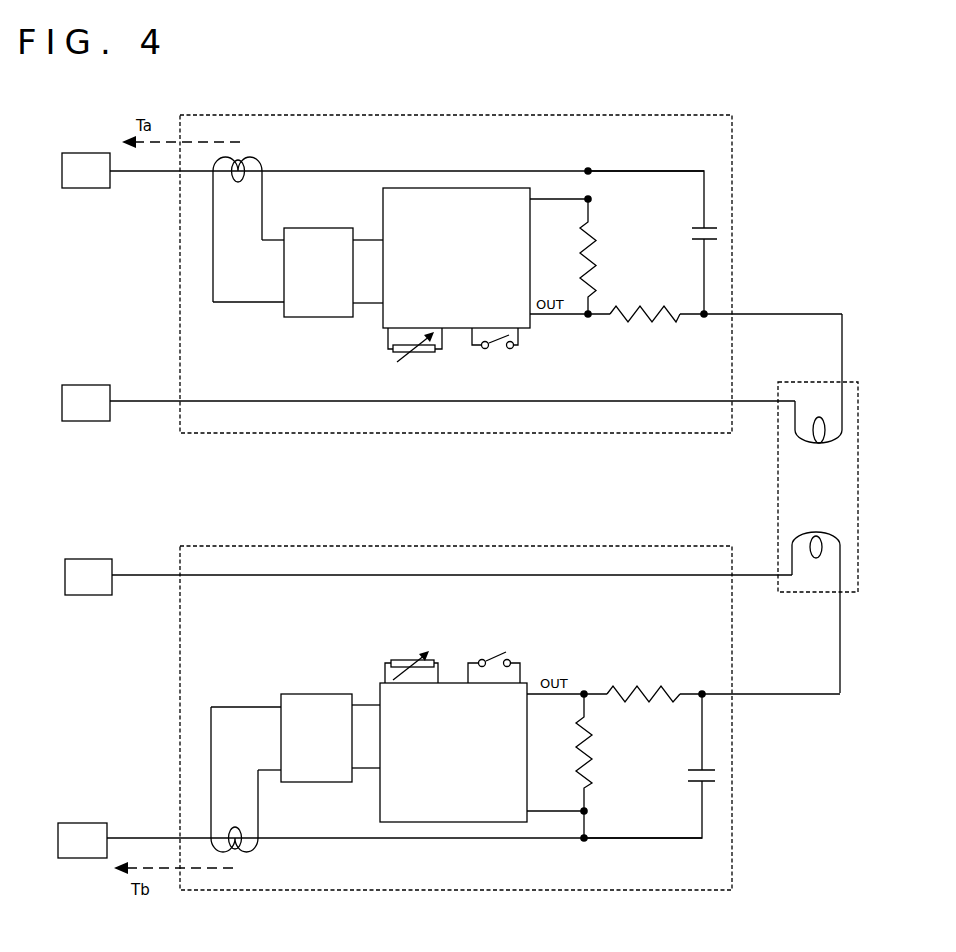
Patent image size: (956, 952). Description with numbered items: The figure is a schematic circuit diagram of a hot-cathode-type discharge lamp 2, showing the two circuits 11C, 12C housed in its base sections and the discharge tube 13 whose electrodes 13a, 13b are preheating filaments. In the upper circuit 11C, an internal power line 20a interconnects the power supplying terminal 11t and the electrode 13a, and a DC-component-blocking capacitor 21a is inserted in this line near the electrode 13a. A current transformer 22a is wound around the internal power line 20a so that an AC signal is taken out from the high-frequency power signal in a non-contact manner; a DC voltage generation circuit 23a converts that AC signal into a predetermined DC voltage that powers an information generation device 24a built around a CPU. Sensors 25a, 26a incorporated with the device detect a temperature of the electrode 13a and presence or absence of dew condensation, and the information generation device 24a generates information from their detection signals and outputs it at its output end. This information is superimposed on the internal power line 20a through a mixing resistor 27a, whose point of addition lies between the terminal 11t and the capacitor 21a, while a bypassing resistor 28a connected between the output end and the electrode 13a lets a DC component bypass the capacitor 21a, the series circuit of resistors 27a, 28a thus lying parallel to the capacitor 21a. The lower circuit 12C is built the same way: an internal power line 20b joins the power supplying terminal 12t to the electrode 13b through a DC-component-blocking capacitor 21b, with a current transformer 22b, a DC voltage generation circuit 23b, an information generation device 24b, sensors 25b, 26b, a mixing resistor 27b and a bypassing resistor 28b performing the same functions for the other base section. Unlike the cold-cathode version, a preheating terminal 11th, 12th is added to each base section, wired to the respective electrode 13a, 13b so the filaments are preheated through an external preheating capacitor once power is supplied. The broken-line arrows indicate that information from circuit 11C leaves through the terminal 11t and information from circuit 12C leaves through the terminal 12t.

The discharge lamp 2 is at (783, 91).
The circuit 11C is at (576, 109).
The circuit 12C is at (475, 540).
The power supplying terminal 11t is at (86, 153).
The preheating terminal 11th is at (104, 362).
The power supplying terminal 12t is at (85, 823).
The preheating terminal 12th is at (107, 537).
The discharge tube 13 is at (771, 480).
The electrode 13a is at (812, 397).
The electrode 13b is at (812, 568).
The internal power line 20a is at (612, 170).
The internal power line 20b is at (655, 840).
The DC-component-blocking capacitor 21a is at (692, 228).
The DC-component-blocking capacitor 21b is at (692, 781).
The current transformer 22a is at (262, 159).
The current transformer 22b is at (258, 853).
The DC voltage generation circuit 23a is at (307, 318).
The DC voltage generation circuit 23b is at (300, 694).
The information generation device 24a is at (383, 216).
The information generation device 24b is at (376, 786).
The sensor 25a is at (396, 362).
The sensor 25b is at (395, 661).
The sensor 26a is at (512, 352).
The sensor 26b is at (513, 655).
The mixing resistor 27a is at (601, 247).
The mixing resistor 27b is at (595, 752).
The bypassing resistor 28a is at (648, 322).
The bypassing resistor 28b is at (656, 690).